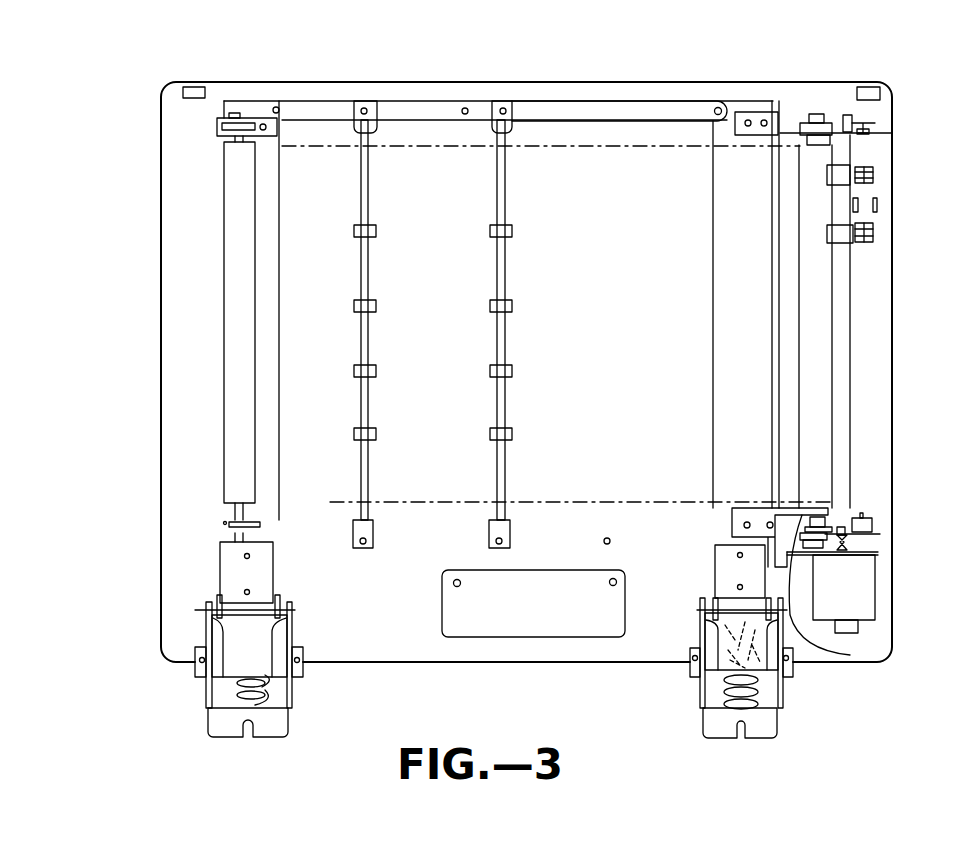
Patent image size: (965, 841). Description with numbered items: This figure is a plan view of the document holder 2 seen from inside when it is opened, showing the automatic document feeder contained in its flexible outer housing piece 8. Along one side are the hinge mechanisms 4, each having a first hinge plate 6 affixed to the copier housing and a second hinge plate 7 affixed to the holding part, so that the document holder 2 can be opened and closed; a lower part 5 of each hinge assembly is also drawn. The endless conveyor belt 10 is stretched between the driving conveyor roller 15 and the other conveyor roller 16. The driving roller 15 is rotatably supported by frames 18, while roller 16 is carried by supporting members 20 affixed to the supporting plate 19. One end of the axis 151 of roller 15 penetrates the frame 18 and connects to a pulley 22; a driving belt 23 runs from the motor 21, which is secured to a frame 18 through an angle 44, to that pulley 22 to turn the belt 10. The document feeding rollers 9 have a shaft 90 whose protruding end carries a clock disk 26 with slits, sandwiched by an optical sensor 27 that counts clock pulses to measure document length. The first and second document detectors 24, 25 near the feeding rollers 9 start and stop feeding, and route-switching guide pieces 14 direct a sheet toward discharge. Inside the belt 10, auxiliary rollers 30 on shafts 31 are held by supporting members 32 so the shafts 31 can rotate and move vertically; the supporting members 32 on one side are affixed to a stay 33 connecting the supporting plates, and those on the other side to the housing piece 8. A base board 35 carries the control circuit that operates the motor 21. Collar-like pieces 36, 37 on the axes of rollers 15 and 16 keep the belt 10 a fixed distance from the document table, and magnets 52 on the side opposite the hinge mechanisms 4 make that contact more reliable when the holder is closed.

The document holder 2 is at (736, 72).
The hinge mechanisms 4 is at (196, 684).
The base plate 5 is at (270, 722).
The first hinge plate 6 is at (232, 577).
The second hinge plate 7 is at (202, 612).
The outer housing piece 8 is at (631, 82).
The feeding rollers 9 is at (874, 178).
The endless conveyor belt 10 is at (566, 145).
The route-switching guide pieces 14 is at (838, 173).
The driving conveyor roller 15 is at (822, 373).
The conveyor roller 16 is at (232, 295).
The frames 18 is at (776, 128).
The supporting plate 19 is at (268, 122).
The supporting members 20 is at (233, 122).
The motor 21 is at (855, 590).
The pulley 22 is at (874, 585).
The driving belt 23 is at (850, 532).
The first document detector 24 is at (877, 204).
The second document detector 25 is at (860, 197).
The clock disk 26 is at (870, 123).
The optical sensor 27 is at (847, 128).
The auxiliary rollers 30 is at (356, 230).
The shafts 31 is at (375, 122).
The supporting members 32 is at (352, 128).
The stay 33 is at (677, 102).
The base board 35 is at (520, 615).
The collar-like pieces 36 is at (812, 125).
The collar-like pieces 37 is at (233, 126).
The angle 44 is at (870, 552).
The magnets 52 is at (191, 87).
The shaft 90 is at (870, 133).
The axis 151 is at (812, 525).